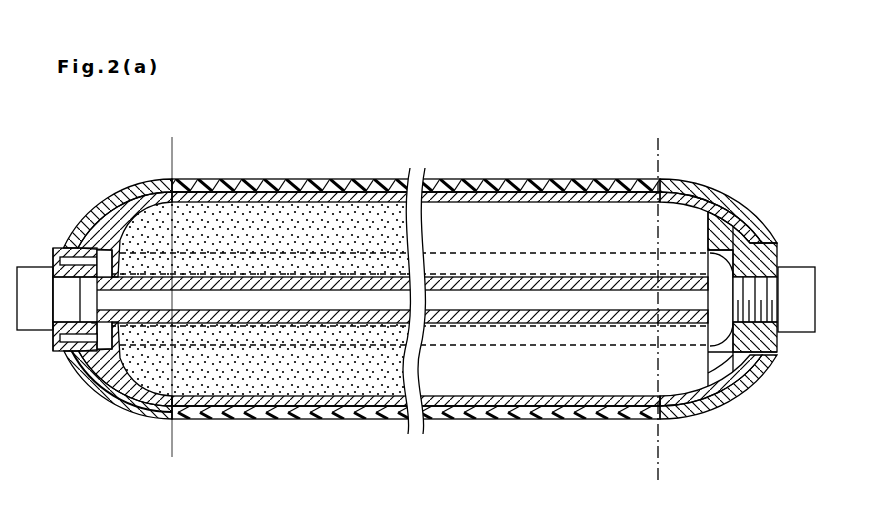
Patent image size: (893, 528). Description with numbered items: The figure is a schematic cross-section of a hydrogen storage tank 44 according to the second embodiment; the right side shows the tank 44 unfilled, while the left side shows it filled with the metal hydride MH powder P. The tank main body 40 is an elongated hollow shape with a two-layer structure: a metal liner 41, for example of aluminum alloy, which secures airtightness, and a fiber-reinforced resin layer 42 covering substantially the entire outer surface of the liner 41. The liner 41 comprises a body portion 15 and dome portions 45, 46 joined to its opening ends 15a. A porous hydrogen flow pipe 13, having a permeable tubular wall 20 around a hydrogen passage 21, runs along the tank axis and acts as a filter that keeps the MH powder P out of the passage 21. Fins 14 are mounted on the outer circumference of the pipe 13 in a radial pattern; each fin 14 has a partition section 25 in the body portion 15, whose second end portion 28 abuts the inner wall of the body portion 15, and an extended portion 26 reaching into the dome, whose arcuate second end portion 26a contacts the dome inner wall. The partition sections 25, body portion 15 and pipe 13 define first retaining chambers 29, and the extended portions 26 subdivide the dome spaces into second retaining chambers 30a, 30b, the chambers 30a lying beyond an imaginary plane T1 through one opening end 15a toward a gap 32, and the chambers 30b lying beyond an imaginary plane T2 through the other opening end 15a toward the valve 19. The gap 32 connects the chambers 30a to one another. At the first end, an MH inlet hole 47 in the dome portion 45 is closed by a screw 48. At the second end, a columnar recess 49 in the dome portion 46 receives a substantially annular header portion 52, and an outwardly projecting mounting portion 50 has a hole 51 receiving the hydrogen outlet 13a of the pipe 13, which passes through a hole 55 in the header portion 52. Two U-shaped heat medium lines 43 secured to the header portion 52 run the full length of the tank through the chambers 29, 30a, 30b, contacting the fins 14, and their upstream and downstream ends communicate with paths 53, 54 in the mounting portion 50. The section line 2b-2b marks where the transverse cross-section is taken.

The hydrogen flow pipe 13 is at (722, 378).
The hydrogen outlet 13a is at (100, 250).
The fins 14 is at (600, 190).
The body portion 15 is at (528, 196).
The opening end 15a is at (670, 424).
The valve 19 is at (34, 267).
The tubular wall 20 is at (498, 323).
The hydrogen passage 21 is at (542, 312).
The partition section 25 is at (483, 215).
The extended portion 26 is at (728, 222).
The arcuate second end portion 26a is at (707, 205).
The second end portion 28 is at (565, 190).
The first retaining chamber 29 is at (250, 204).
The second retaining chamber 30a is at (706, 223).
The second retaining chamber 30b is at (178, 208).
The gap 32 is at (740, 356).
The tank main body 40 is at (416, 273).
The liner 41 is at (392, 180).
The fiber-reinforced resin layer 42 is at (438, 180).
The heat medium line 43 is at (440, 347).
The hydrogen storage tank 44 is at (91, 444).
The dome portion 45 is at (708, 220).
The dome portion 46 is at (154, 200).
The MH inlet hole 47 is at (776, 333).
The screw 48 is at (795, 268).
The columnar recess 49 is at (84, 372).
The mounting portion 50 is at (62, 248).
The hole 51 is at (44, 322).
The header portion 52 is at (122, 207).
The path 53 is at (72, 257).
The path 54 is at (60, 353).
The hole 55 is at (108, 395).
The MH powder P is at (348, 212).
The imaginary plane T1 is at (656, 470).
The imaginary plane T2 is at (176, 450).
The section line 2b- 2b is at (658, 138).